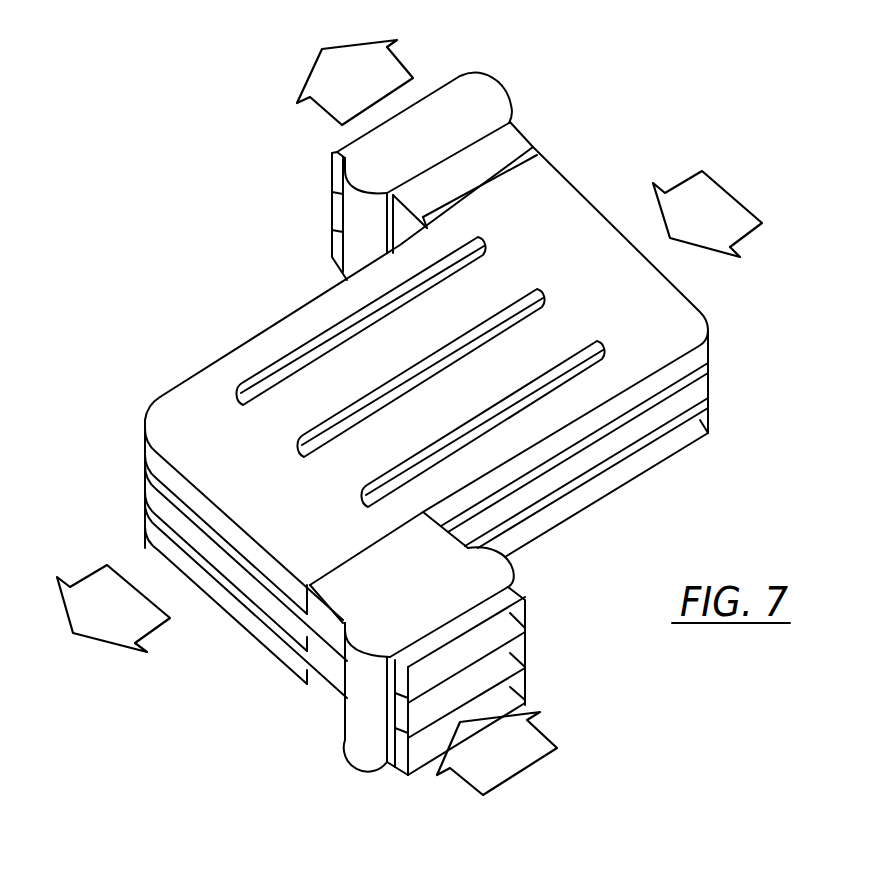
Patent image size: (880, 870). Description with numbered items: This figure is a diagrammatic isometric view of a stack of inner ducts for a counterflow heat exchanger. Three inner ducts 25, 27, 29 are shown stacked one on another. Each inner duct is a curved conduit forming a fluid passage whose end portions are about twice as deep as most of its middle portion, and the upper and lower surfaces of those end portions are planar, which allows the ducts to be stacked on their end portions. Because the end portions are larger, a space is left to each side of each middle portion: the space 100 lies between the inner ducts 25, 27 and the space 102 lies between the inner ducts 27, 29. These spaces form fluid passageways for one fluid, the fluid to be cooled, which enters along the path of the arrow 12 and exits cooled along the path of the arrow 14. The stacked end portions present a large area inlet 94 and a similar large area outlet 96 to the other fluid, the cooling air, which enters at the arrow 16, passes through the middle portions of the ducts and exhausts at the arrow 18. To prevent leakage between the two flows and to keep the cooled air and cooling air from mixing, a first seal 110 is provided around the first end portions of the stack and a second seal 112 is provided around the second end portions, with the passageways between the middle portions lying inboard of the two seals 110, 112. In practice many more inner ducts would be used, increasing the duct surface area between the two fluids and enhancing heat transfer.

The arrow 12 is at (727, 203).
The arrow 14 is at (107, 625).
The arrow 16 is at (513, 762).
The arrow 18 is at (325, 75).
The inner duct 25 is at (697, 352).
The inner duct 27 is at (692, 397).
The inner duct 29 is at (678, 443).
The large area inlet 94 is at (497, 637).
The large area outlet 96 is at (448, 78).
The space 100 is at (163, 497).
The space 102 is at (167, 540).
The first seal 110 is at (495, 102).
The second seal 112 is at (365, 752).